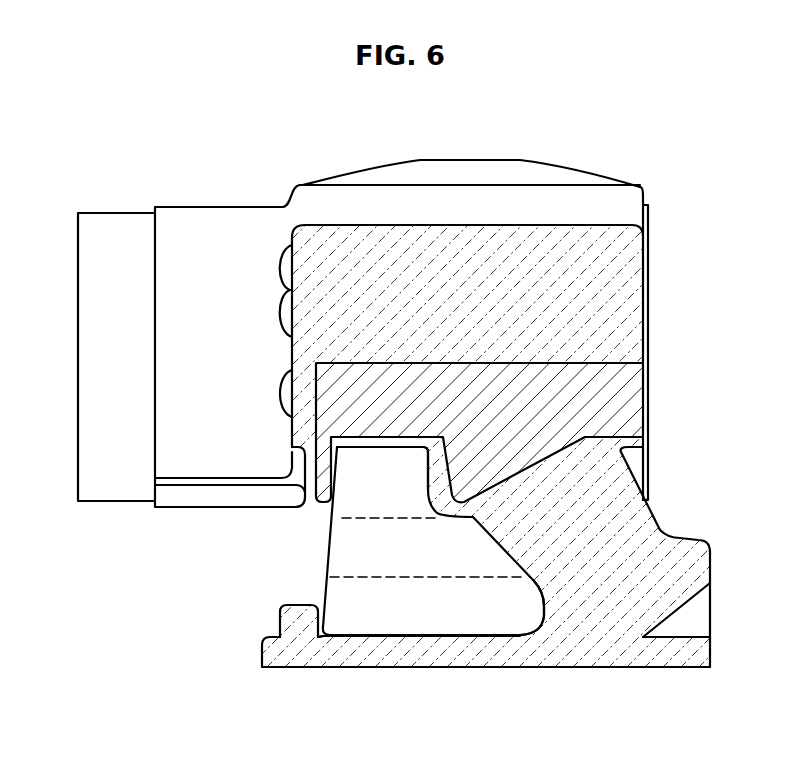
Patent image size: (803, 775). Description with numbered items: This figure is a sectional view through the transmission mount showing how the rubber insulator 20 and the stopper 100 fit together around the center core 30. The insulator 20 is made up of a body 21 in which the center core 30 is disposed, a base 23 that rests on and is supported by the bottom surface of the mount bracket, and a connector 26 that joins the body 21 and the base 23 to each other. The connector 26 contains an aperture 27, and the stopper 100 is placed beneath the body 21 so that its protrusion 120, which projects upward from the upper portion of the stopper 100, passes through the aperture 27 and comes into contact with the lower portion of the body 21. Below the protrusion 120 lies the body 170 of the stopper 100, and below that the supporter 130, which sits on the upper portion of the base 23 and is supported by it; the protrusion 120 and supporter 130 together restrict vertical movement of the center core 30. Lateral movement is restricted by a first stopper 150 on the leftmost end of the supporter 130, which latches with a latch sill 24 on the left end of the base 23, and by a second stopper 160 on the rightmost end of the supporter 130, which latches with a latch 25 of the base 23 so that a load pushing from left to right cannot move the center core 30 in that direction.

The insulator 20 is at (582, 158).
The body 21 is at (605, 200).
The center core 30 is at (120, 200).
The aperture 27 is at (432, 465).
The connector 26 is at (645, 524).
The base 23 is at (676, 655).
The latch sill 24 is at (284, 620).
The latch 25 is at (513, 640).
The stopper 100 is at (360, 600).
The protrusion 120 is at (355, 473).
The body 170 is at (327, 566).
The supporter 130 is at (432, 610).
The second stopper 160 is at (520, 614).
The first stopper 150 is at (307, 625).